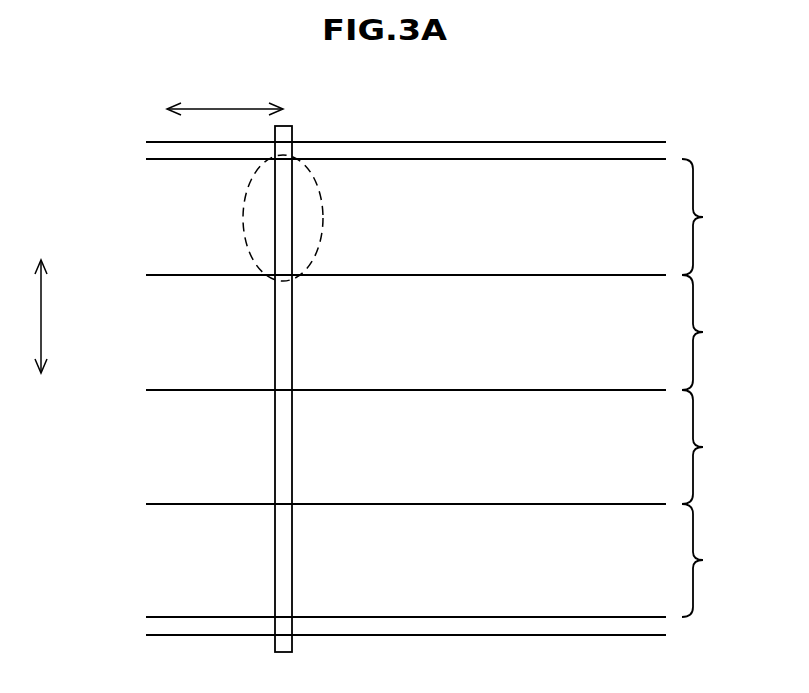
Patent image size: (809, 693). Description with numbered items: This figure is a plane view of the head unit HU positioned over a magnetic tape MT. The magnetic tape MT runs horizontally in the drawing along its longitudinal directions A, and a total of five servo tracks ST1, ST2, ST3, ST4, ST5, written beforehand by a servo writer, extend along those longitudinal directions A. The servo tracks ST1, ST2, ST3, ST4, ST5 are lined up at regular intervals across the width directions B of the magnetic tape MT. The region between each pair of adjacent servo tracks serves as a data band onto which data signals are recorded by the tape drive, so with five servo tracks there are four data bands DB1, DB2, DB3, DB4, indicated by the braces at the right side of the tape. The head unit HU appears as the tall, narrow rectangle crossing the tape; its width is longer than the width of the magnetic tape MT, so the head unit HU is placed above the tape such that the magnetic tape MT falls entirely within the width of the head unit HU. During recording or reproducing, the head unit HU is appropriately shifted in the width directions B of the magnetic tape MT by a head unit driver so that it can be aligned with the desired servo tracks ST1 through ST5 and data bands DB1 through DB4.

The magnetic tape MT is at (513, 127).
The head unit HU is at (292, 137).
The servo track ST1 is at (372, 168).
The servo track ST2 is at (372, 284).
The servo track ST3 is at (372, 399).
The servo track ST4 is at (372, 513).
The servo track ST5 is at (372, 626).
The data band DB1 is at (720, 217).
The data band DB2 is at (720, 332).
The data band DB3 is at (720, 447).
The data band DB4 is at (720, 560).
The longitudinal directions A is at (225, 98).
The width directions B is at (30, 316).